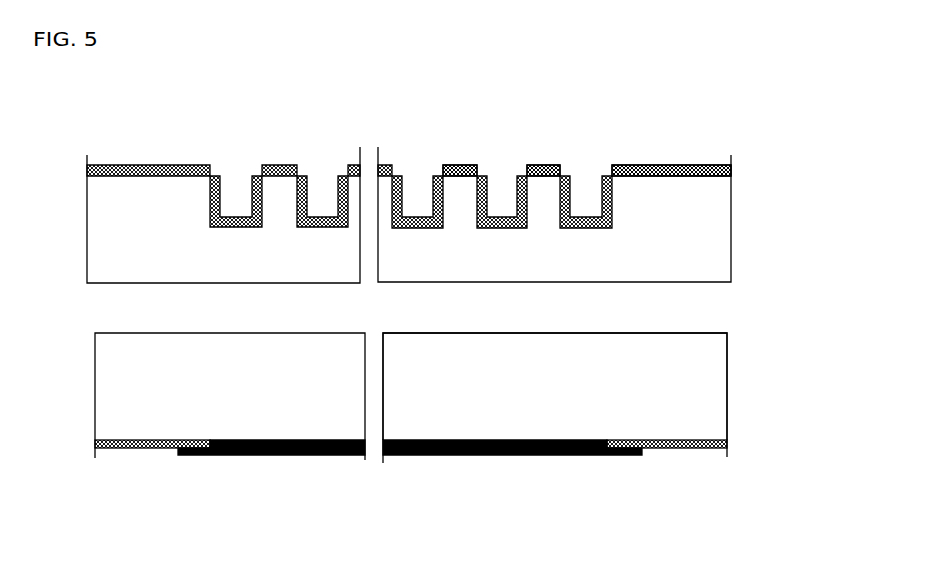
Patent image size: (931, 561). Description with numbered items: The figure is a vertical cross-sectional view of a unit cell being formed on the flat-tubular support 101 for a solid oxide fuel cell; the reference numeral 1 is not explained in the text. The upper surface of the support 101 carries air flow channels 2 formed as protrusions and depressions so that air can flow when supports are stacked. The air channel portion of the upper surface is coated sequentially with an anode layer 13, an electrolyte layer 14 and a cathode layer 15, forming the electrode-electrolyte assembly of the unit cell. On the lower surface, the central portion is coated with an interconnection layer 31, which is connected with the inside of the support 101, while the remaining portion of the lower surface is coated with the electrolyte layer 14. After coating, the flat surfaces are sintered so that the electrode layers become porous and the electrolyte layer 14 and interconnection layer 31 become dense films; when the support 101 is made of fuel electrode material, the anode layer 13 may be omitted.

The substrate 1 is at (128, 304).
The air flow channel 2 is at (330, 196).
The anode layer 13 is at (611, 237).
The electrolyte layer 14 is at (566, 168).
The cathode layer 15 is at (511, 198).
The interconnection layer 31 is at (463, 457).
The flat-tubular support 101 is at (446, 389).